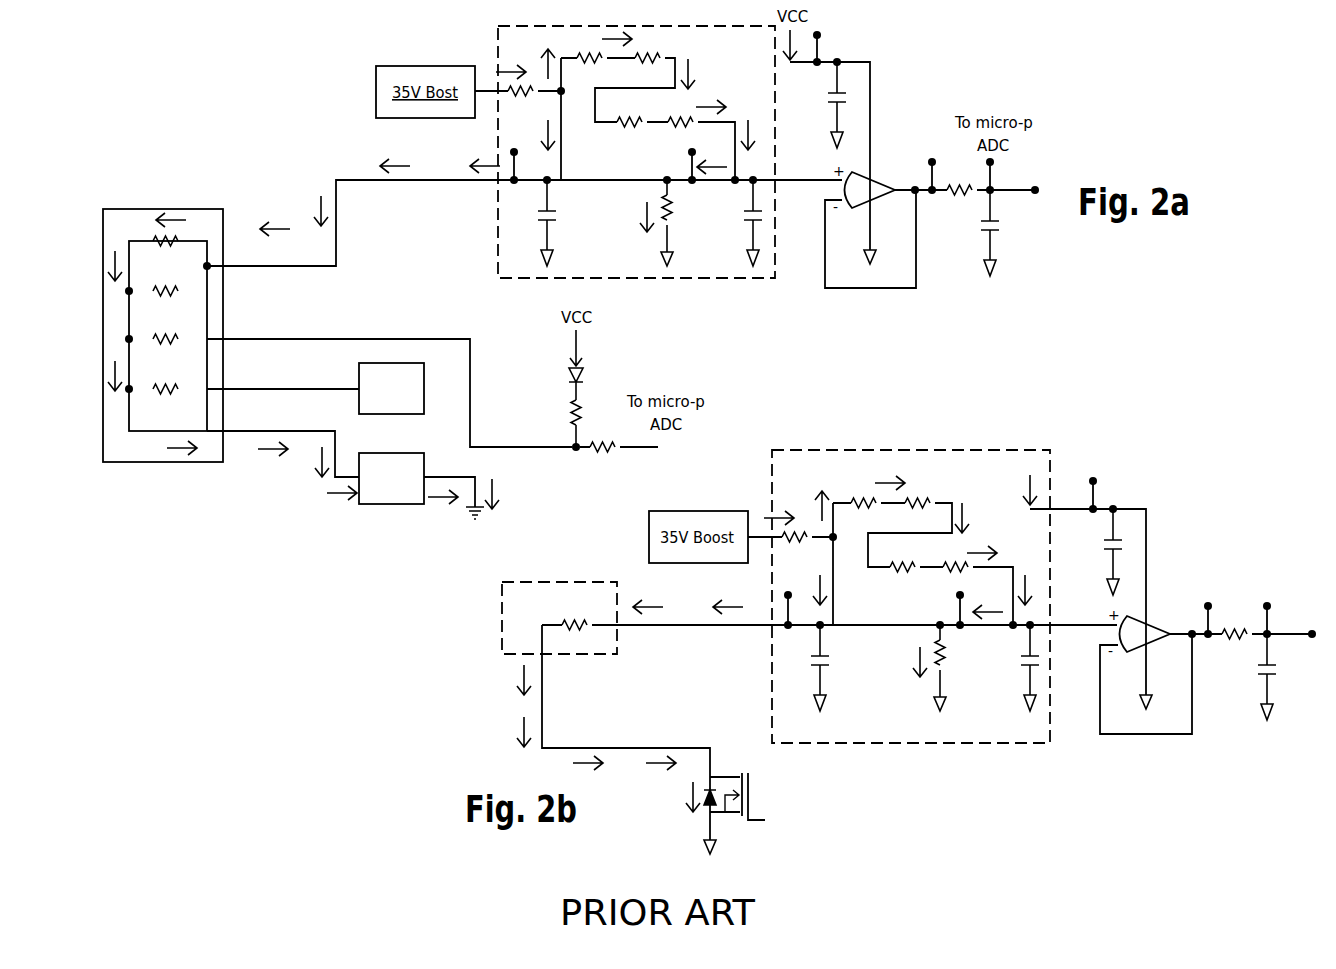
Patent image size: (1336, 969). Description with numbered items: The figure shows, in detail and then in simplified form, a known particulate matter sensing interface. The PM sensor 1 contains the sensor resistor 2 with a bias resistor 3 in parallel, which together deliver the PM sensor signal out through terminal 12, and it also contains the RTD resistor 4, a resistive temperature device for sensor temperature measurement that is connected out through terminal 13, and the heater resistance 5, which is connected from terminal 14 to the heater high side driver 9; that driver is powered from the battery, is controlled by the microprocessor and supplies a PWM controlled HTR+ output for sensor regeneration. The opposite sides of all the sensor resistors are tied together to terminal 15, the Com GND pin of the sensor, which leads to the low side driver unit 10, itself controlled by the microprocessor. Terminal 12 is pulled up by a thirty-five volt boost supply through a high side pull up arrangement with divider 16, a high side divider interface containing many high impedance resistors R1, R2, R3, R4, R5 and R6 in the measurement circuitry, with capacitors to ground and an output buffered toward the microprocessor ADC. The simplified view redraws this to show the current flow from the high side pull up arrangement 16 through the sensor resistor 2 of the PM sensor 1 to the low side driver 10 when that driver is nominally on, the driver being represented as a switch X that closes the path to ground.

In FIG. 2A, the PM sensor 1 is at (153, 463).
In FIG. 2B, the PM sensor 1 is at (502, 595).
In FIG. 2A, the sensor resistor 2 is at (175, 240).
In FIG. 2B, the sensor resistor 2 is at (580, 632).
In FIG. 2A, the bias resistor 3 is at (180, 290).
In FIG. 2A, the RTD resistor 4 is at (158, 335).
In FIG. 2A, the heater resistance 5 is at (180, 385).
In FIG. 2A, the heater high side driver 9 is at (424, 398).
In FIG. 2A, the low side driver unit 10 is at (370, 504).
In FIG. 2A, the terminal 12 is at (336, 207).
In FIG. 2A, the terminal 13 is at (362, 338).
In FIG. 2A, the terminal 14 is at (323, 387).
In FIG. 2A, the terminal 15 is at (237, 433).
In FIG. 2A, the high side pull up arrangement with divider 16 is at (538, 26).
In FIG. 2B, the high side pull up arrangement with divider 16 is at (948, 450).
In FIG. 2A, the resistor R1 is at (592, 52).
In FIG. 2A, the resistor R2 is at (649, 52).
In FIG. 2A, the resistor R3 is at (625, 124).
In FIG. 2A, the resistor R4 is at (680, 124).
In FIG. 2A, the resistor R5 is at (673, 213).
In FIG. 2A, the resistor R6 is at (517, 97).
In FIG. 2B, the switch X is at (773, 826).